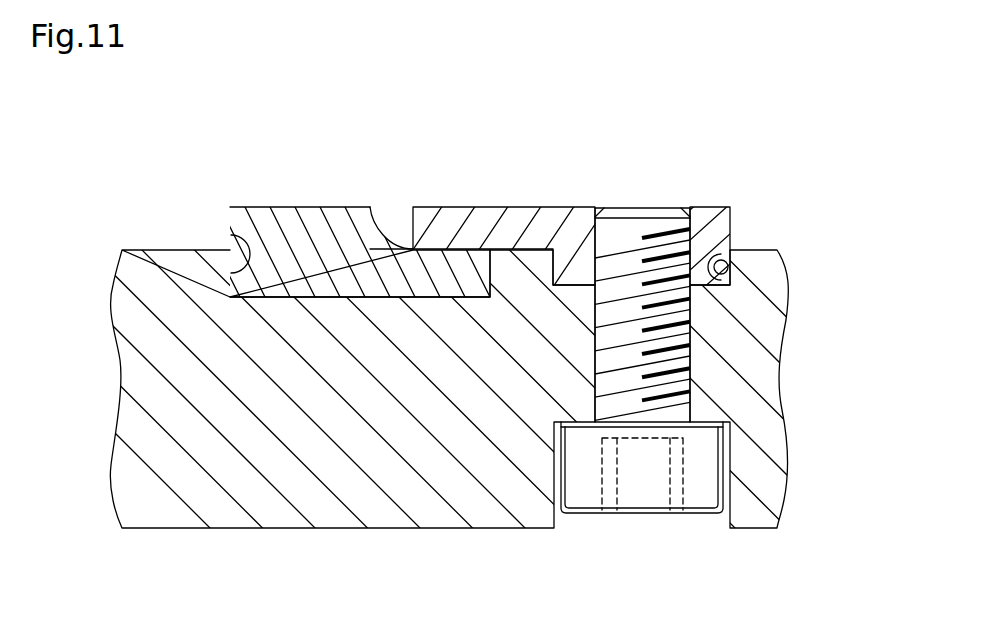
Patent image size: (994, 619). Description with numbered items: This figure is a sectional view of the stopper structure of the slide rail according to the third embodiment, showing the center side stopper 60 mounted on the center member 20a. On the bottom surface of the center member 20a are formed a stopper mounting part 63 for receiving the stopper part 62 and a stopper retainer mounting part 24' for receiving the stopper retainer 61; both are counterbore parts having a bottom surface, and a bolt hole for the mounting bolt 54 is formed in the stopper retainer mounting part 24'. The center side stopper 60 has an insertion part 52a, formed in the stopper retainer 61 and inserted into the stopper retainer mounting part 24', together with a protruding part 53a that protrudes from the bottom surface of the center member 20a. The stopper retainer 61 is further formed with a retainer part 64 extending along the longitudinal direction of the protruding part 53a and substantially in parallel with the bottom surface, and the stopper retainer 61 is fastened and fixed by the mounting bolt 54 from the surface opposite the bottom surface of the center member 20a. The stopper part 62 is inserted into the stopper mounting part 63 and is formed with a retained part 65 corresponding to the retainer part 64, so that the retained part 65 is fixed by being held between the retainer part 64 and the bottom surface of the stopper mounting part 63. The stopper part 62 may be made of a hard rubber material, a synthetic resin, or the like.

The center side stopper 60 is at (665, 118).
The stopper retainer 61 is at (823, 218).
The stopper part 62 is at (260, 215).
The stopper mounting part 63 is at (240, 258).
The retainer part 64 is at (433, 227).
The retained part 65 is at (388, 235).
The protruding part 53a is at (705, 212).
The insertion part 52a is at (703, 273).
The stopper retainer mounting part 24' is at (819, 272).
The center member 20a is at (780, 430).
The mounting bolt 54 is at (700, 493).